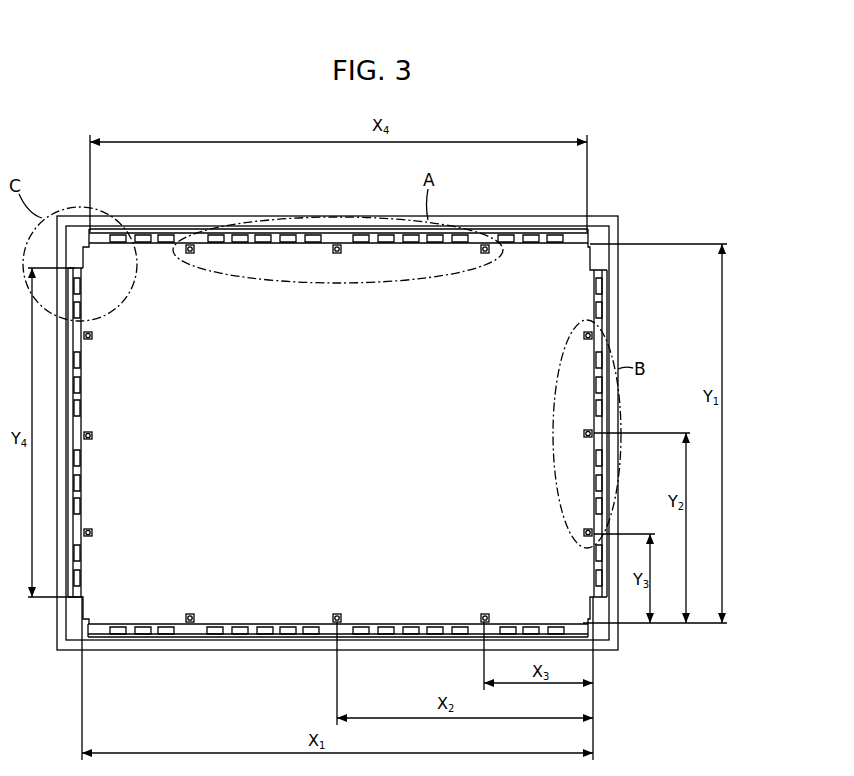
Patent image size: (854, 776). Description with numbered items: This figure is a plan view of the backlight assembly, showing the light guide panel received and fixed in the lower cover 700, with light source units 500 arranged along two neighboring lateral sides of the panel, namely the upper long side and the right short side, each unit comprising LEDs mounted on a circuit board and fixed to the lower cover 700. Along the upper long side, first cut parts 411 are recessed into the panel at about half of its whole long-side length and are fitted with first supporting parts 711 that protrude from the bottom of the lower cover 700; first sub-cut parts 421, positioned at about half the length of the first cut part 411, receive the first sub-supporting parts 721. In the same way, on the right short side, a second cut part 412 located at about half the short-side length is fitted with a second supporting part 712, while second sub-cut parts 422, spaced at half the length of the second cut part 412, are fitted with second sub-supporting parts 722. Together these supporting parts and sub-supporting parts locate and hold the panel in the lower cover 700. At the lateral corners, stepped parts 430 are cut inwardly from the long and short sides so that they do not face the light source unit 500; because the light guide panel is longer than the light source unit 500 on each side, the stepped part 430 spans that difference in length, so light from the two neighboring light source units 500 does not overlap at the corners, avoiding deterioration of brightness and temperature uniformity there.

The lower cover 700 is at (607, 217).
The light source unit 500 is at (607, 292).
The stepped part 430 is at (83, 257).
The first supporting part 711 is at (337, 245).
The first sub-supporting part 721 is at (190, 245).
The first cut part 411 is at (337, 254).
The first sub-cut part 421 is at (190, 254).
The second supporting part 712 is at (594, 432).
The second sub-supporting part 722 is at (594, 335).
The second cut part 412 is at (583, 433).
The second sub-cut part 422 is at (583, 335).